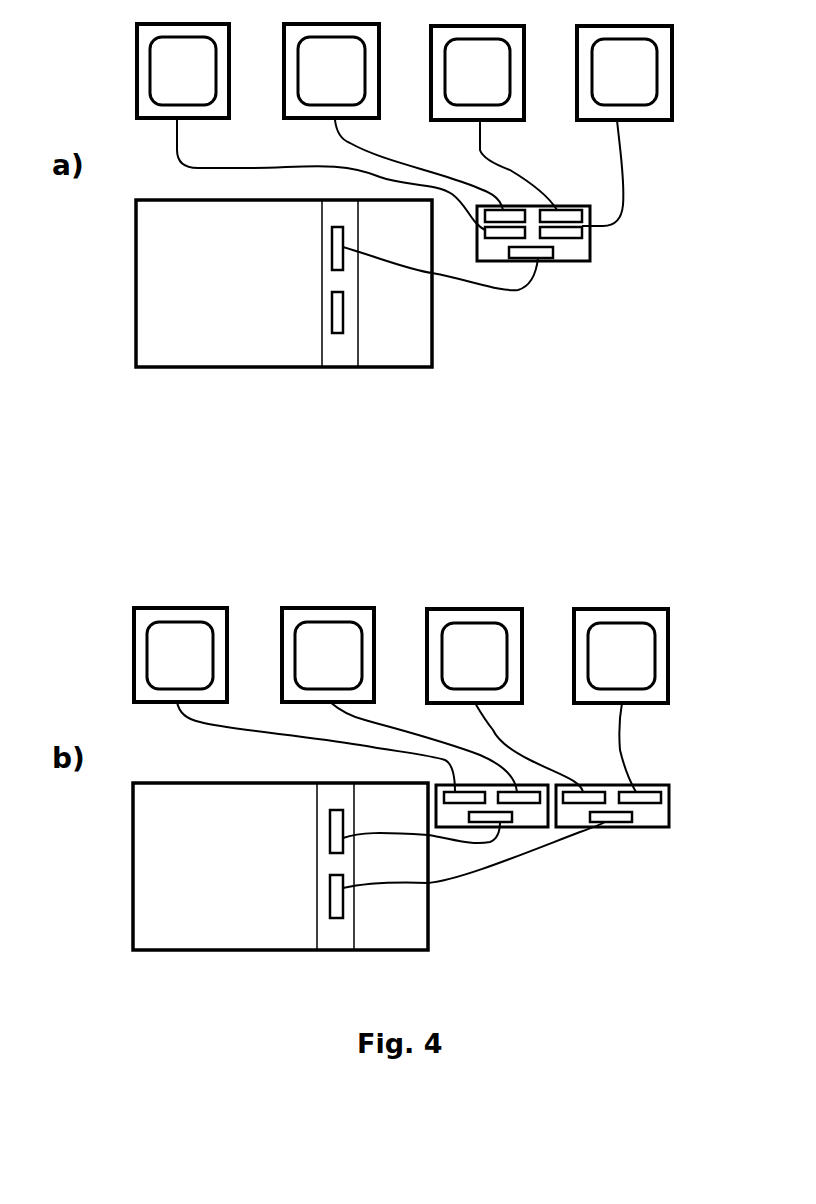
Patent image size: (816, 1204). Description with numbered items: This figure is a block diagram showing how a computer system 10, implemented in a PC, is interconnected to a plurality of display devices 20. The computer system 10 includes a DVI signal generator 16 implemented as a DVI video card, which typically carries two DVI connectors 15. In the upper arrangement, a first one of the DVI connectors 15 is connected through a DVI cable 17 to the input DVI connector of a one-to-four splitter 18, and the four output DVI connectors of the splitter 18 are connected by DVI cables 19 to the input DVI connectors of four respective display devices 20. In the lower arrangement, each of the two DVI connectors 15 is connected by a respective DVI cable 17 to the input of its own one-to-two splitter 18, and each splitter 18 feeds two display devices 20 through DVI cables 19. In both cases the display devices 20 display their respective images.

The computer system 10 is at (282, 575).
The DVI connectors 15 is at (330, 258).
The DVI signal generator 16 is at (358, 343).
The DVI cable 17 is at (538, 282).
The splitter 18 is at (590, 247).
The DVI cables 19 is at (673, 180).
The display devices 20 is at (711, 80).